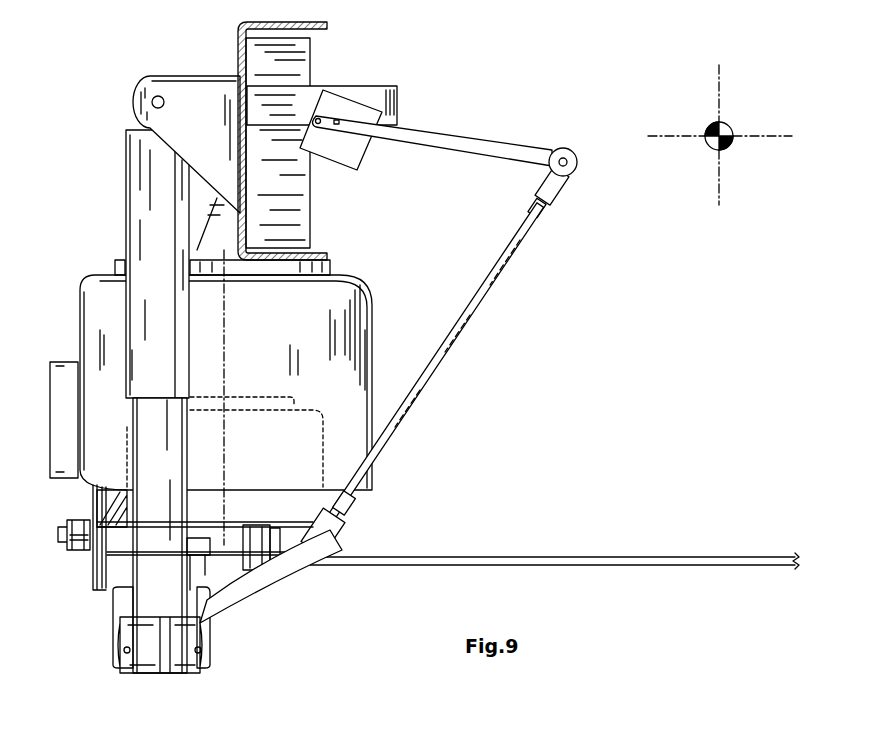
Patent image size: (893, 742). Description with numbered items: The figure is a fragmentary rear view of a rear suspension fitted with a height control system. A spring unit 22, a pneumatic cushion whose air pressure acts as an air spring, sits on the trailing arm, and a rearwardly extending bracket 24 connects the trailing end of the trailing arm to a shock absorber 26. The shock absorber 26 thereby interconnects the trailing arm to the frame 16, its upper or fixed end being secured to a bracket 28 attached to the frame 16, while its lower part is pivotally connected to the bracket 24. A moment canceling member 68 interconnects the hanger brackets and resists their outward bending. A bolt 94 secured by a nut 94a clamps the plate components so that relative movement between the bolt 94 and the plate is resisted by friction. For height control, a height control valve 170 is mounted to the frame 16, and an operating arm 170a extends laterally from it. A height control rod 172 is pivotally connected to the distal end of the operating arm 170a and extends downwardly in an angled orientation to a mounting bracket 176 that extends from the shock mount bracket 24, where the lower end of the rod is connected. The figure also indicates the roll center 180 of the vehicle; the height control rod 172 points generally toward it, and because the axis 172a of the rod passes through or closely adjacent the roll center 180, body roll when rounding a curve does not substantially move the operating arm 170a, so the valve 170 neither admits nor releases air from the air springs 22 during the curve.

The frame 16 is at (273, 23).
The spring unit 22 is at (263, 336).
The bracket 24 is at (98, 633).
The shock absorber 26 is at (157, 201).
The bracket 28 is at (207, 123).
The moment canceling member 68 is at (615, 545).
The bolt 94 is at (60, 533).
The nut 94a is at (80, 557).
The height control valve 170 is at (389, 71).
The operating arm 170a is at (448, 142).
The height control rod 172 is at (453, 333).
The axis 172a is at (563, 162).
The mounting bracket 176 is at (240, 600).
The roll center 180 is at (750, 114).